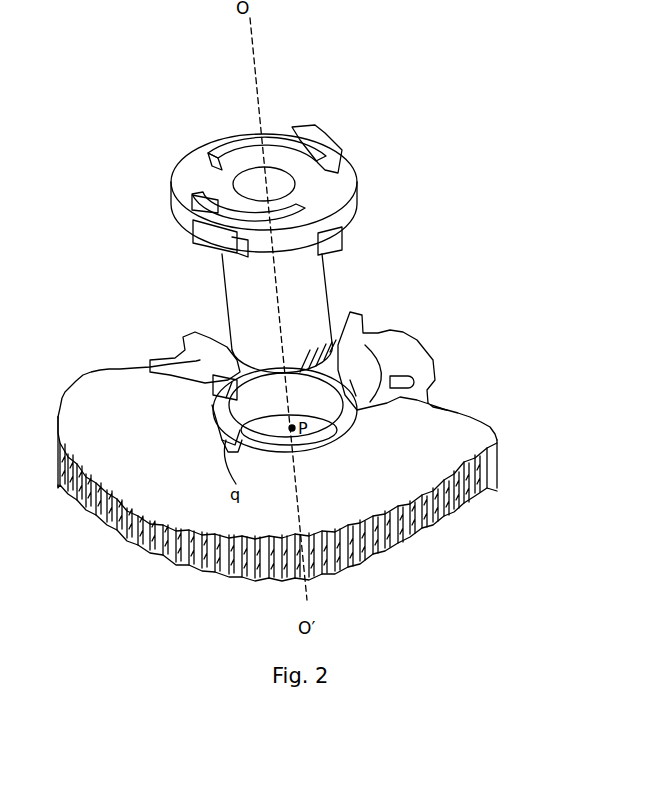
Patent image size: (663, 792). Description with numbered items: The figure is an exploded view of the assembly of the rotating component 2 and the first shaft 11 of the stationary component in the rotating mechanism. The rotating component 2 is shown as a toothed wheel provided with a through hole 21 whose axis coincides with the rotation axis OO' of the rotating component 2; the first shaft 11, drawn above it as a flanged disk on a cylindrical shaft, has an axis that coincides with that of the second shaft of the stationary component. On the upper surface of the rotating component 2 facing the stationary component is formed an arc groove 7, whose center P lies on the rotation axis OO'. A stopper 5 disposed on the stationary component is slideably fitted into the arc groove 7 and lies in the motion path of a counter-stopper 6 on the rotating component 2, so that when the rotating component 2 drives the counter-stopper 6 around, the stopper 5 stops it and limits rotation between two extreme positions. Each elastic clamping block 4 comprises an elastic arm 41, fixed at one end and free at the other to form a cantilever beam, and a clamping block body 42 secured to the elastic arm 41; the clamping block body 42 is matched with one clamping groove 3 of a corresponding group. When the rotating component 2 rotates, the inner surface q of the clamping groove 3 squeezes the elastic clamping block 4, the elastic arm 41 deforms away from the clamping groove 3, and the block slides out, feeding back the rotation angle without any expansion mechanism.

The rotating component 2 is at (455, 430).
The clamping groove 3 is at (236, 445).
The elastic clamping block 4 is at (255, 60).
The stopper 5 is at (345, 230).
The counter-stopper 6 is at (220, 390).
The arc groove 7 is at (218, 428).
The first shaft 11 is at (203, 173).
The through hole 21 is at (338, 368).
The elastic arm 41 is at (242, 133).
The clamping block body 42 is at (292, 130).